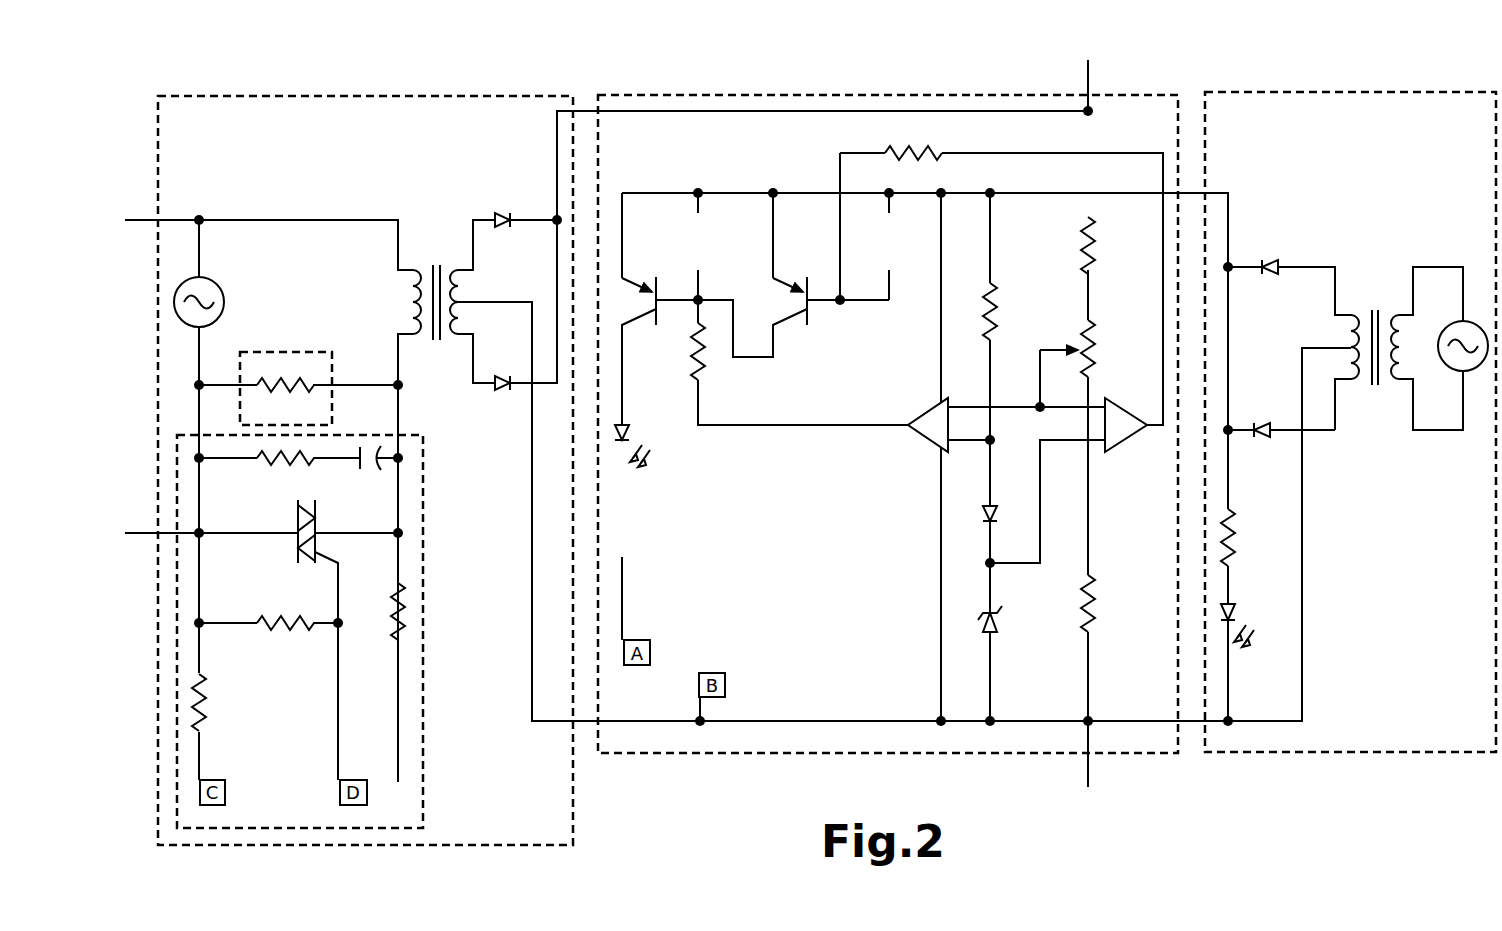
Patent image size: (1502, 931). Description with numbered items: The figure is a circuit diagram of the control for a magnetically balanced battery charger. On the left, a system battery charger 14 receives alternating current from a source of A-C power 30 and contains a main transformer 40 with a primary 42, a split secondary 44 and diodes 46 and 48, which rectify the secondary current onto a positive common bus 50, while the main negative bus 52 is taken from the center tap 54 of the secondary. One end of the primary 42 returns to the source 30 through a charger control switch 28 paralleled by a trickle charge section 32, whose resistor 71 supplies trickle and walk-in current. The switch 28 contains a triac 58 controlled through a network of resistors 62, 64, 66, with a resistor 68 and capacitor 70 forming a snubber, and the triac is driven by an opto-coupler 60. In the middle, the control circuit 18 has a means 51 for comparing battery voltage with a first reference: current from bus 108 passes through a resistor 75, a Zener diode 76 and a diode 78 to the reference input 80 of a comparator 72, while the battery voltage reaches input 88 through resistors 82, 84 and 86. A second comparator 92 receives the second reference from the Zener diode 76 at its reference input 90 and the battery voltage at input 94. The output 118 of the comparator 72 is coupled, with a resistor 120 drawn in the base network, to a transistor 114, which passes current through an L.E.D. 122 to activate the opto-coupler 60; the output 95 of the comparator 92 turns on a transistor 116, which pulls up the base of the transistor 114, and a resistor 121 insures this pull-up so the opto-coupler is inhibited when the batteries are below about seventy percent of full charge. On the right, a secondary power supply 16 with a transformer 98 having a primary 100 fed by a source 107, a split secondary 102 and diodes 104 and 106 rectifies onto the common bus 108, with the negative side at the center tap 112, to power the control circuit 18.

The system battery charger 14 is at (392, 96).
The secondary power supply 16 is at (1385, 92).
The control circuit 18 is at (1132, 92).
The charger control switch 28 is at (425, 750).
The source of A-C power 30 is at (205, 287).
The trickle charge section 32 is at (302, 352).
The main transformer 40 is at (411, 291).
The primary 42 is at (410, 303).
The split secondary 44 is at (445, 338).
The diode 46 is at (505, 213).
The diode 48 is at (503, 393).
The common bus 50 is at (745, 111).
The means for comparing 51 is at (924, 392).
The main negative bus 52 is at (847, 723).
The center tap 54 is at (490, 302).
The triac 58 is at (297, 537).
The opto-coupler 60 is at (362, 740).
The resistor 62 is at (292, 628).
The resistor 64 is at (410, 610).
The resistor 66 is at (205, 702).
The resistor 68 is at (276, 461).
The capacitor 70 is at (364, 478).
The resistor 71 is at (283, 380).
The comparator 72 is at (920, 447).
The resistor 75 is at (1000, 320).
The Zener diode 76 is at (1000, 620).
The diode 78 is at (983, 512).
The reference input 80 is at (962, 445).
The resistor 82 is at (1082, 247).
The resistor 84 is at (1090, 350).
The resistor 86 is at (1095, 605).
The input 88 is at (970, 405).
The reference input 90 is at (1068, 442).
The second comparator 92 is at (1130, 432).
The input 94 is at (1097, 400).
The output 95 is at (1163, 268).
The transformer 98 is at (1352, 285).
The primary 100 is at (1413, 452).
The split secondary 102 is at (1340, 338).
The diode 104 is at (1283, 262).
The diode 106 is at (1262, 435).
The source 107 is at (1453, 372).
The common bus 108 is at (1230, 217).
The center tap 112 is at (1305, 570).
The transistor 114 is at (653, 280).
The transistor 116 is at (803, 280).
The output 118 is at (780, 427).
The resistor 120 is at (705, 368).
The resistor 121 is at (893, 150).
The L.E.D. 122 is at (640, 437).